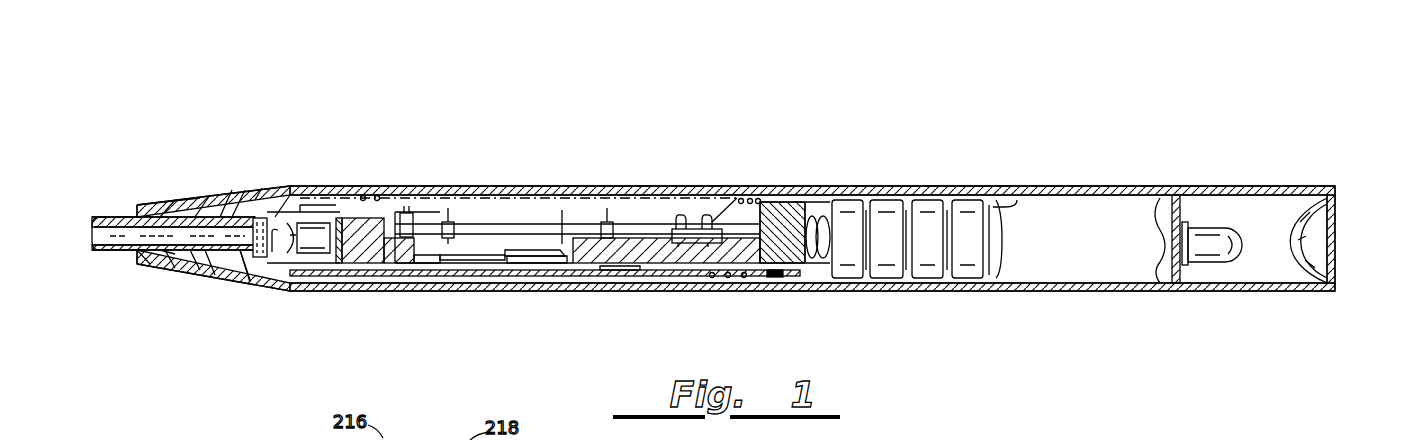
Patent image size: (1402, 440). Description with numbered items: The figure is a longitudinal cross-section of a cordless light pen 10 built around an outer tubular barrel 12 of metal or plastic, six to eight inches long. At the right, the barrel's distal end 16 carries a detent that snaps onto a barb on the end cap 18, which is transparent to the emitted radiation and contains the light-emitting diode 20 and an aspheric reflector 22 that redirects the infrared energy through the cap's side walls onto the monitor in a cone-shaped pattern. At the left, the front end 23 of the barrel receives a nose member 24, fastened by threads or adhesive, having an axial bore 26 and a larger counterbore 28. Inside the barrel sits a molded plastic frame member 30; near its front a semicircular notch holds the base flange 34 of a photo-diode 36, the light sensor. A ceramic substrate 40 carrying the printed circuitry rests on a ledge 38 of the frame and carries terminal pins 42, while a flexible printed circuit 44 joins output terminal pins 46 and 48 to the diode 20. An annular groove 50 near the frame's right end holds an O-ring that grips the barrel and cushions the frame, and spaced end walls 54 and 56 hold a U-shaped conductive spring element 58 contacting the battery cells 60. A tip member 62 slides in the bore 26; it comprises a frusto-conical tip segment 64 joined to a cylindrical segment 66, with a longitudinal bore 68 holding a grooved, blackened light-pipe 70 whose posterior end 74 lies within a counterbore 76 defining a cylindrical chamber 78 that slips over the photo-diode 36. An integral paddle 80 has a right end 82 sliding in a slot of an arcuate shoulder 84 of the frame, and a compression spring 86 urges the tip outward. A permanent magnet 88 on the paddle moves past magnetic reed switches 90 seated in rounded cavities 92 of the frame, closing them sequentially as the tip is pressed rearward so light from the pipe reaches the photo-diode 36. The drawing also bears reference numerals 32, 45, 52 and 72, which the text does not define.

The cordless light pen 10 is at (463, 120).
The outer tubular barrel 12 is at (564, 292).
The distal end 16 is at (1177, 194).
The end cap 18 is at (1300, 187).
The light-emitting diode 20 is at (1230, 240).
The aspheric reflector 22 is at (1291, 266).
The front end 23 is at (275, 190).
The nose member 24 is at (190, 200).
The axial bore 26 is at (166, 208).
The counterbore 28 is at (242, 193).
The frame member 30 is at (370, 240).
The bar 32 is at (332, 216).
The base flange 34 is at (336, 222).
The photo-diode 36 is at (316, 248).
The ledge 38 is at (415, 224).
The ceramic substrate 40 is at (531, 232).
The terminal pins 42 is at (445, 216).
The flexible printed circuit 44 is at (712, 220).
The contact spring 45 is at (997, 242).
The output terminal pin 46 is at (678, 216).
The output terminal pin 48 is at (708, 218).
The annular groove 50 is at (790, 220).
The contact 52 is at (775, 280).
The first end wall 54 is at (809, 220).
The second end wall 56 is at (828, 222).
The U-shaped conductive spring element 58 is at (822, 256).
The battery cells 60 is at (905, 212).
The tip member 62 is at (108, 213).
The frusto-conical tip segment 64 is at (98, 252).
The cylindrical segment 66 is at (190, 262).
The longitudinal bore 68 is at (126, 253).
The light-pipe 70 is at (161, 263).
The tip bore 72 is at (96, 232).
The posterior end 74 is at (258, 277).
The counterbore 76 is at (286, 215).
The cylindrical chamber 78 is at (282, 246).
The paddle 80 is at (450, 276).
The right end of paddle 82 is at (634, 270).
The arcuate shoulder 84 is at (575, 258).
The compression spring 86 is at (406, 218).
The permanent magnet 88 is at (428, 262).
The magnetic reed switches 90 is at (548, 254).
The rounded cavities 92 is at (505, 232).